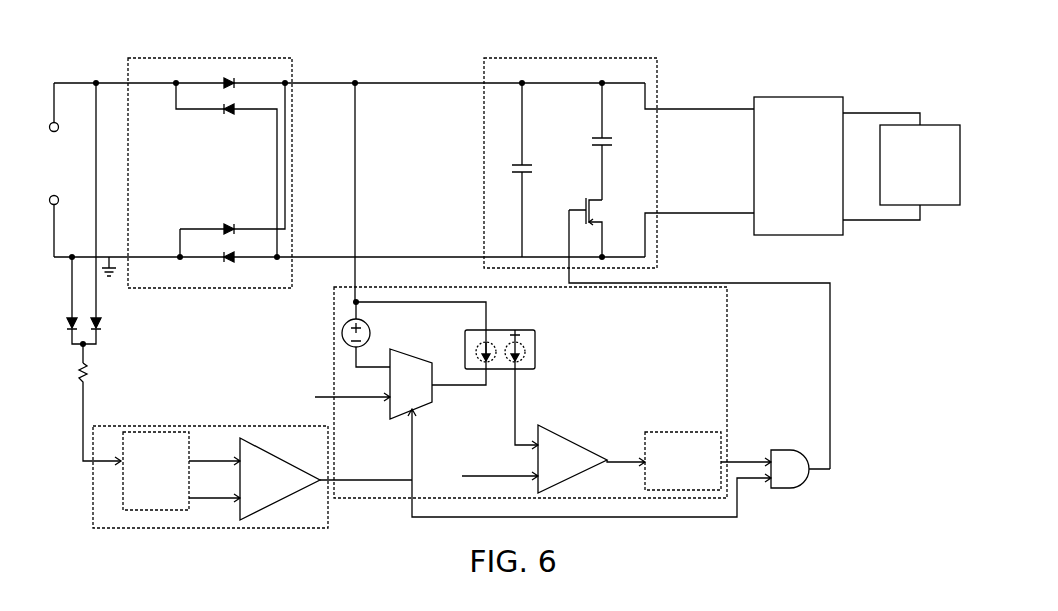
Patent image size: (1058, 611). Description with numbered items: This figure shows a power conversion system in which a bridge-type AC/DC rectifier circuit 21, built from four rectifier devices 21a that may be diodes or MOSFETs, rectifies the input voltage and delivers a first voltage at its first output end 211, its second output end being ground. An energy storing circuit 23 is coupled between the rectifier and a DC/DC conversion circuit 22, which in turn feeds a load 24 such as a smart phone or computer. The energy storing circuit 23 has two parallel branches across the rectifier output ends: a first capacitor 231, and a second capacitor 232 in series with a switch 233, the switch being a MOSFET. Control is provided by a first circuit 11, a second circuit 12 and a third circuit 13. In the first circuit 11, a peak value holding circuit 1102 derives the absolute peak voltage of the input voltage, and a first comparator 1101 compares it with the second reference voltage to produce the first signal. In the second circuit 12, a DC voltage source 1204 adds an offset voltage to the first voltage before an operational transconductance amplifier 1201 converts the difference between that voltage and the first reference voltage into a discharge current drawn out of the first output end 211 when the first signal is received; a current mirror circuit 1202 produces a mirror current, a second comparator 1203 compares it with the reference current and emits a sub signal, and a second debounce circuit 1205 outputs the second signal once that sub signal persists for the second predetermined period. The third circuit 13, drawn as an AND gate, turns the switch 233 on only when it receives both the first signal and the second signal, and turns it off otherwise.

The AC/DC rectifier circuit 21 is at (208, 57).
The rectifier device 21a is at (232, 173).
The first output end 211 is at (355, 80).
The energy storing circuit 23 is at (570, 57).
The first capacitor 231 is at (508, 170).
The second capacitor 232 is at (587, 141).
The switch 233 is at (699, 333).
The DC/DC conversion circuit 22 is at (787, 95).
The load 24 is at (943, 123).
The first circuit 11 is at (213, 424).
The first comparator 1101 is at (254, 479).
The peak value holding circuit 1102 is at (157, 510).
The second circuit 12 is at (727, 395).
The operational transconductance amplifier 1201 is at (411, 384).
The current mirror circuit 1202 is at (536, 358).
The second comparator 1203 is at (553, 460).
The DC voltage source 1204 is at (374, 343).
The second debounce circuit 1205 is at (653, 432).
The third circuit 13 is at (800, 469).